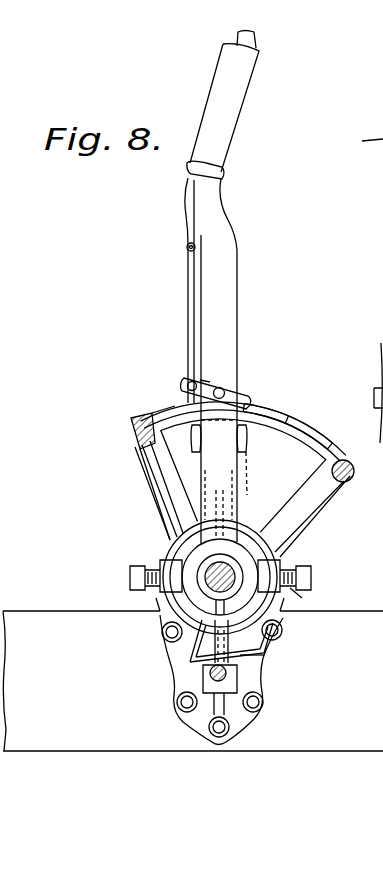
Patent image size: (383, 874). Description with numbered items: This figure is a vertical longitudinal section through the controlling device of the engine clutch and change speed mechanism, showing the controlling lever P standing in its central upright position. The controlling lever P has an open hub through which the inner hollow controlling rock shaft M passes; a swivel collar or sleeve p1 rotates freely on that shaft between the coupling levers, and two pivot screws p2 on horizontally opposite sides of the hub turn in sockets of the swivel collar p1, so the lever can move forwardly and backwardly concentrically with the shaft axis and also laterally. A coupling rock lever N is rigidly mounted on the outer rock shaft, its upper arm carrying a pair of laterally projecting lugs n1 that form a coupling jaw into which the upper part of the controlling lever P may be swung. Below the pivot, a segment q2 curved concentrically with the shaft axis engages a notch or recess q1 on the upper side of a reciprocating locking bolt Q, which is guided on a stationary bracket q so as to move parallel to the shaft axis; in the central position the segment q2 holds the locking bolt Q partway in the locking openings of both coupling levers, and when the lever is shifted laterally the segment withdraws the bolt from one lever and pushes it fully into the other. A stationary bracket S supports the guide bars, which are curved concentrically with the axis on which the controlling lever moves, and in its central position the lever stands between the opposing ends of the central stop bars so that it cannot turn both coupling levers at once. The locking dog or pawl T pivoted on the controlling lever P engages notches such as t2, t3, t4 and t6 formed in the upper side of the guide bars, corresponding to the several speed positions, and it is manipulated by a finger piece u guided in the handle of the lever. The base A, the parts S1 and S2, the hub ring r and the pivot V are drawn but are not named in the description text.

The base plate A is at (6, 735).
The finger piece u is at (244, 39).
The controlling lever P is at (220, 285).
The stationary bracket S is at (308, 446).
The sector arm S1 is at (160, 478).
The sector end S2 is at (160, 418).
The locking dog or pawl T is at (248, 398).
The notch t2 is at (205, 392).
The notch t3 is at (288, 416).
The notch t4 is at (330, 445).
The notch t6 is at (255, 403).
The coupling rock lever N is at (234, 490).
The laterally projecting lugs n1 is at (192, 438).
The hub ring r is at (172, 545).
The swivel collar or sleeve p1 is at (312, 578).
The pivot screws p2 is at (132, 578).
The pivot shaft V is at (302, 588).
The inner hollow controlling rock shaft M is at (162, 616).
The reciprocating locking bolt or pin Q is at (203, 680).
The stationary bracket q is at (203, 670).
The notch or recess q1 is at (237, 686).
The segment q2 is at (264, 656).